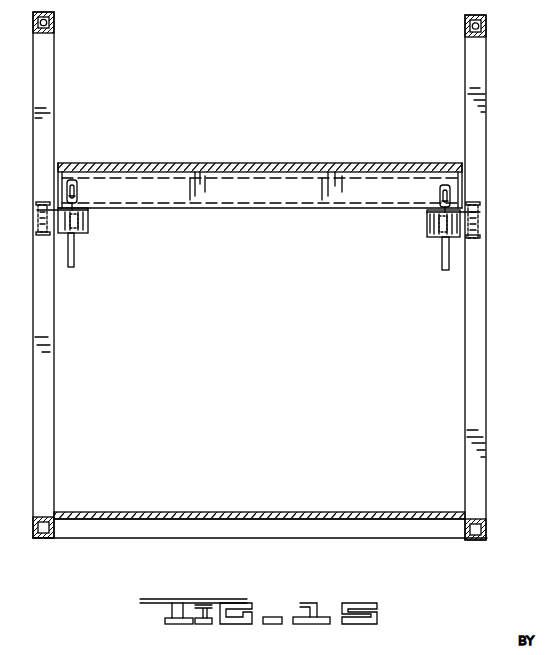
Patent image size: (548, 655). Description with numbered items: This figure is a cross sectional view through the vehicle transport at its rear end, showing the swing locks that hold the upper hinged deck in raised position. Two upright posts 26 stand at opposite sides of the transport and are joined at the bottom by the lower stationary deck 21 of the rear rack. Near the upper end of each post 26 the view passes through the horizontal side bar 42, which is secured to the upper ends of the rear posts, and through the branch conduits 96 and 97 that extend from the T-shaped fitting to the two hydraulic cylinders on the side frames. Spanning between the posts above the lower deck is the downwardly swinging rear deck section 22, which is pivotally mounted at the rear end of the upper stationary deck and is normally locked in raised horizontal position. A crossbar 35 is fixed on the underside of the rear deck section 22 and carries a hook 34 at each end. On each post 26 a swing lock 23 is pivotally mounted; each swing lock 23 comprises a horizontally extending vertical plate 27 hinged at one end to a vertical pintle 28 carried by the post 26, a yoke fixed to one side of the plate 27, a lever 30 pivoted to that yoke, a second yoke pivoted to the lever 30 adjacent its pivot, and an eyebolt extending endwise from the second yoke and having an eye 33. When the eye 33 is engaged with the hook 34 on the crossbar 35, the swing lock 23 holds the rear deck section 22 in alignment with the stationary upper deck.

The lower stationary deck 21 is at (282, 521).
The rear deck section 22 is at (265, 170).
The swing lock 23 is at (92, 222).
The post 26 is at (40, 382).
The vertical plate 27 is at (428, 216).
The pintle 28 is at (52, 236).
The lever 30 is at (75, 250).
The eye 33 is at (77, 198).
The hook 34 is at (73, 179).
The crossbar 35 is at (289, 194).
The side bar 42 is at (466, 26).
The branch conduit 96 is at (54, 23).
The branch conduit 97 is at (487, 26).